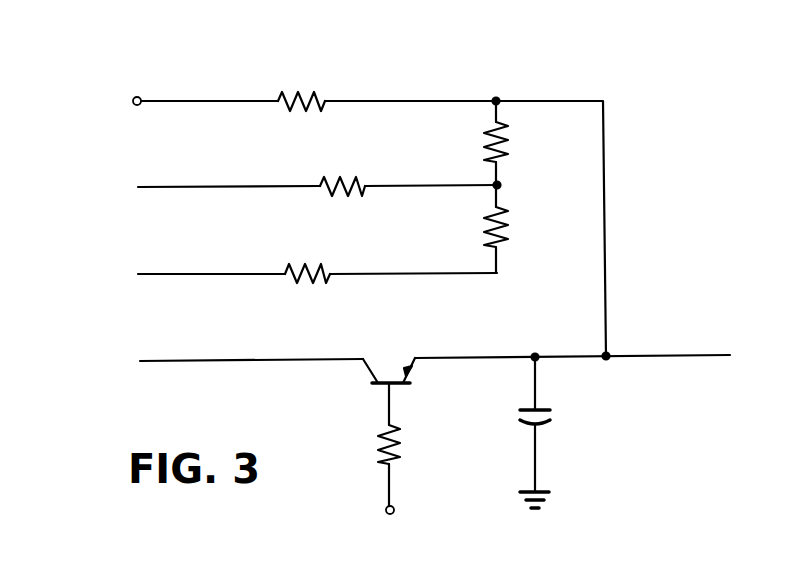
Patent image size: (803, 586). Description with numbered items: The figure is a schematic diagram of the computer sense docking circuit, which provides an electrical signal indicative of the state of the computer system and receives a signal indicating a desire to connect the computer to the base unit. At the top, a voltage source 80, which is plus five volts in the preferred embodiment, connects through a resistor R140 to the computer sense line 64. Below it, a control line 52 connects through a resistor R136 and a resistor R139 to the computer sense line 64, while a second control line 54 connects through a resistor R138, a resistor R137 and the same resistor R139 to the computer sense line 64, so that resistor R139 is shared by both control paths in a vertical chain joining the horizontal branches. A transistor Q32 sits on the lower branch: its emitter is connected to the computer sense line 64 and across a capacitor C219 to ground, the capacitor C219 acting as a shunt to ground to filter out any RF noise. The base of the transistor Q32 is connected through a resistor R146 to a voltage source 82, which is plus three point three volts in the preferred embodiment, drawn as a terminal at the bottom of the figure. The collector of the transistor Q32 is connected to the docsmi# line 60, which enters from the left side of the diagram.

The voltage source 80 is at (132, 98).
The control line 52 is at (138, 186).
The control line 54 is at (138, 274).
The docsmi# line 60 is at (140, 361).
The computer sense line 64 is at (663, 355).
The voltage source 82 is at (394, 514).
The resistor R140 is at (312, 94).
The resistor R136 is at (322, 182).
The resistor R138 is at (313, 268).
The resistor R139 is at (508, 138).
The resistor R137 is at (508, 224).
The resistor R146 is at (387, 460).
The transistor Q32 is at (377, 385).
The capacitor C219 is at (548, 417).